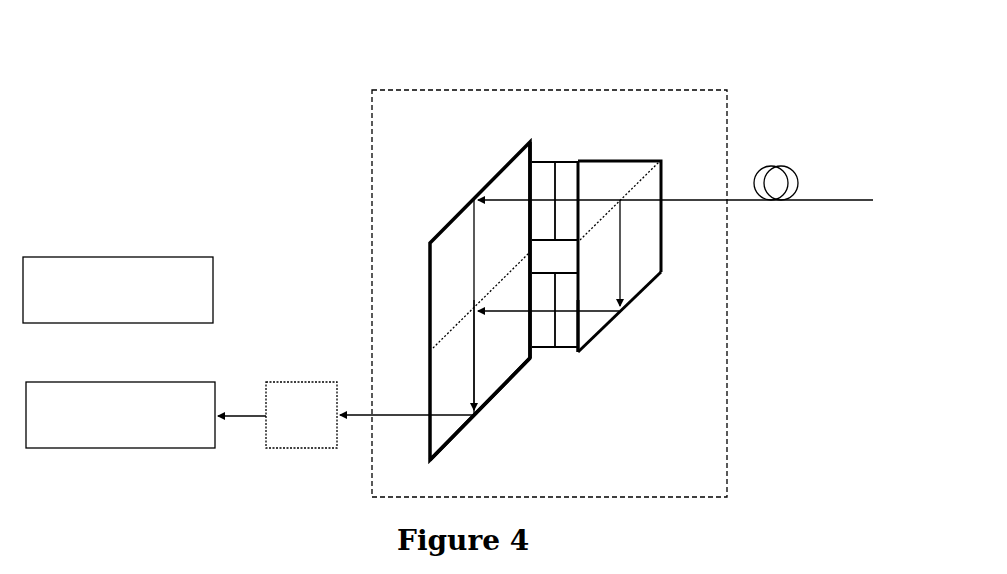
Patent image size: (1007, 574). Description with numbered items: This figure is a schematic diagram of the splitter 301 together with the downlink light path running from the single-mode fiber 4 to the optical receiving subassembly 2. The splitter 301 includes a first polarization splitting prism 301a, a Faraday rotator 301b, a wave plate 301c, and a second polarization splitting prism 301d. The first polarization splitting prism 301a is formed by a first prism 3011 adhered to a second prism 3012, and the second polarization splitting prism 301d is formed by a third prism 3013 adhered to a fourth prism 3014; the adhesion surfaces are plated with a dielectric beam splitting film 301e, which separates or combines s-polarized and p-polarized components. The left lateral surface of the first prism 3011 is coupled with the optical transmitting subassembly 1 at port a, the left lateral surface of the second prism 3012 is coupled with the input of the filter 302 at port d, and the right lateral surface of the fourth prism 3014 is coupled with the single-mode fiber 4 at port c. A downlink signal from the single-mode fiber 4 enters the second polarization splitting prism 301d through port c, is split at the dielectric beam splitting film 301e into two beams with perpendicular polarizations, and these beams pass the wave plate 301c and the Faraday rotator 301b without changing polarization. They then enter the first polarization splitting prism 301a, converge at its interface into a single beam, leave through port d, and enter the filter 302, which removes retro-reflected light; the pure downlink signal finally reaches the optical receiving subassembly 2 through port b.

The optical transmitting subassembly 1 is at (117, 253).
The optical receiving subassembly 2 is at (110, 380).
The filter 302 is at (280, 380).
The splitter 301 is at (647, 83).
The first prism 3011 is at (414, 248).
The second prism 3012 is at (473, 437).
The third prism 3013 is at (577, 152).
The fourth prism 3014 is at (627, 322).
The first polarization splitting prism 301a is at (467, 173).
The Faraday rotator 301b is at (545, 367).
The wave plate 301c is at (567, 357).
The second polarization splitting prism 301d is at (615, 155).
The dielectric beam splitting film 301e is at (452, 332).
The single-mode fiber 4 is at (778, 158).
The port a is at (430, 283).
The port b is at (242, 403).
The port c is at (668, 236).
The port d is at (428, 382).